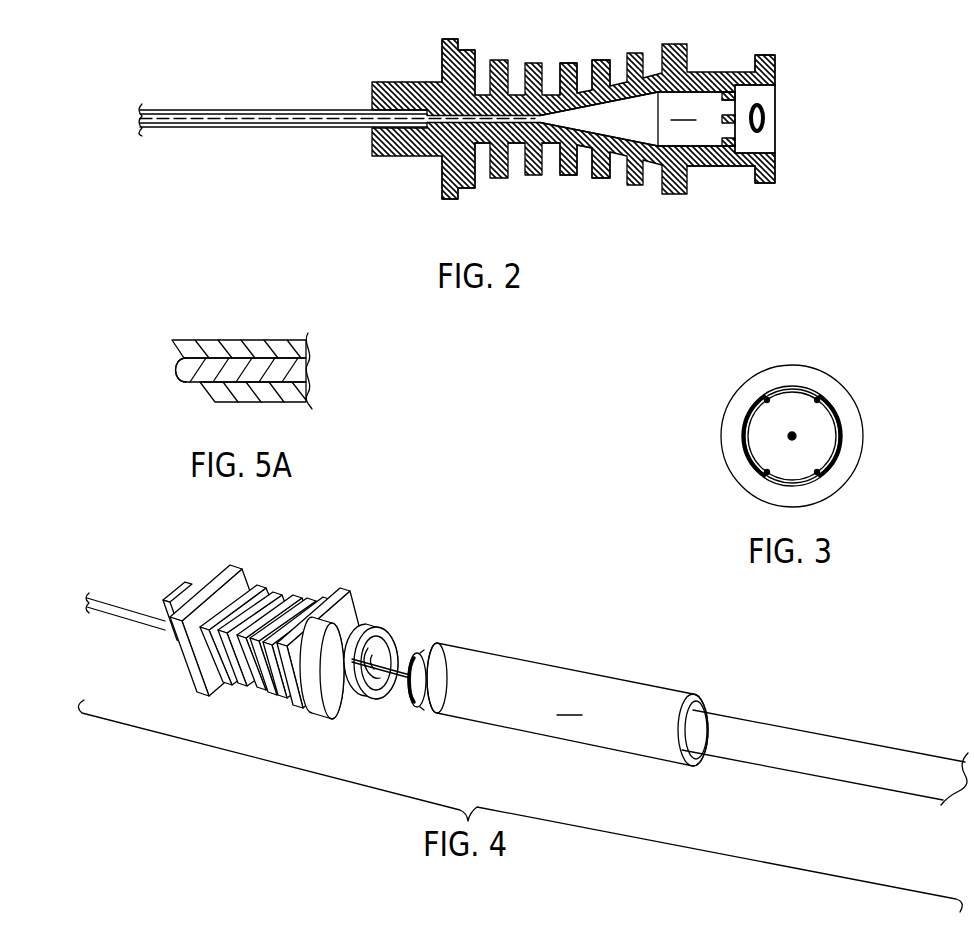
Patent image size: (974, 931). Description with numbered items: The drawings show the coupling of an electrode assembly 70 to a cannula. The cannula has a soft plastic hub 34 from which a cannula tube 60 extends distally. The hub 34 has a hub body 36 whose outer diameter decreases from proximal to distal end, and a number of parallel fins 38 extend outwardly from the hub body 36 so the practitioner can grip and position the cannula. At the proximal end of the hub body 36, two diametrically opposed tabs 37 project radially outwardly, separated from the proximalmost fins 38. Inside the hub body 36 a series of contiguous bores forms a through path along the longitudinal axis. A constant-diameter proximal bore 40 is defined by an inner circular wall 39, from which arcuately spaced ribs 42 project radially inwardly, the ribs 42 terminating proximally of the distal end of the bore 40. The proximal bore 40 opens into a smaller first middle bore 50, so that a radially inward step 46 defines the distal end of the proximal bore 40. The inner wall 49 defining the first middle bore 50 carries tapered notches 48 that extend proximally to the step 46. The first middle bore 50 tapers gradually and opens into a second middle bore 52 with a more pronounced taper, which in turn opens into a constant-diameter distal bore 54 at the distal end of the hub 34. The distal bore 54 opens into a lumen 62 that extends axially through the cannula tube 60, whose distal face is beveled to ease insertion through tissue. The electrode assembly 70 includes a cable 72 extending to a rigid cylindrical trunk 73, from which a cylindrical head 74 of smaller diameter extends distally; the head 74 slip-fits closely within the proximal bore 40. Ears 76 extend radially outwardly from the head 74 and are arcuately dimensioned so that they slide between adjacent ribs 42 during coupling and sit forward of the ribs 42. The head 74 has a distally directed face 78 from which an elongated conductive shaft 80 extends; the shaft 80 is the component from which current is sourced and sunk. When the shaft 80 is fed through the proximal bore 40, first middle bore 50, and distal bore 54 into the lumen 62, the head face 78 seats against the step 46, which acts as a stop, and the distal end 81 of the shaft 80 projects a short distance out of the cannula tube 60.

In FIG. 2, the hub 34 is at (610, 238).
In FIG. 4, the hub 34 is at (291, 588).
In FIG. 2, the hub body 36 is at (550, 148).
In FIG. 4, the hub body 36 is at (320, 668).
In FIG. 2, the tabs 37 is at (766, 184).
In FIG. 4, the tabs 37 is at (358, 694).
In FIG. 2, the fins 38 is at (600, 61).
In FIG. 2, the inner circular wall 39 is at (758, 92).
In FIG. 2, the proximal bore 40 is at (765, 94).
In FIG. 2, the ribs 42 is at (760, 113).
In FIG. 4, the ribs 42 is at (372, 689).
In FIG. 2, the step 46 is at (735, 130).
In FIG. 2, the notches 48 is at (726, 96).
In FIG. 2, the inner wall 49 is at (696, 119).
In FIG. 2, the first middle bore 50 is at (690, 138).
In FIG. 2, the second middle bore 52 is at (617, 122).
In FIG. 2, the distal bore 54 is at (476, 94).
In FIG. 2, the cannula tube 60 is at (165, 110).
In FIG. 5A, the cannula tube 60 is at (278, 341).
In FIG. 4, the cannula tube 60 is at (122, 604).
In FIG. 2, the lumen 62 is at (249, 121).
In FIG. 4, the electrode assembly 70 is at (605, 651).
In FIG. 4, the cable 72 is at (785, 757).
In FIG. 3, the trunk 73 is at (800, 372).
In FIG. 4, the trunk 73 is at (567, 704).
In FIG. 3, the head 74 is at (782, 405).
In FIG. 4, the head 74 is at (423, 647).
In FIG. 3, the ears 76 is at (747, 460).
In FIG. 4, the ears 76 is at (412, 698).
In FIG. 3, the distally directed face 78 is at (815, 418).
In FIG. 5A, the conductive shaft 80 is at (243, 352).
In FIG. 3, the conductive shaft 80 is at (796, 441).
In FIG. 4, the conductive shaft 80 is at (381, 640).
In FIG. 5A, the distal end 81 is at (175, 376).